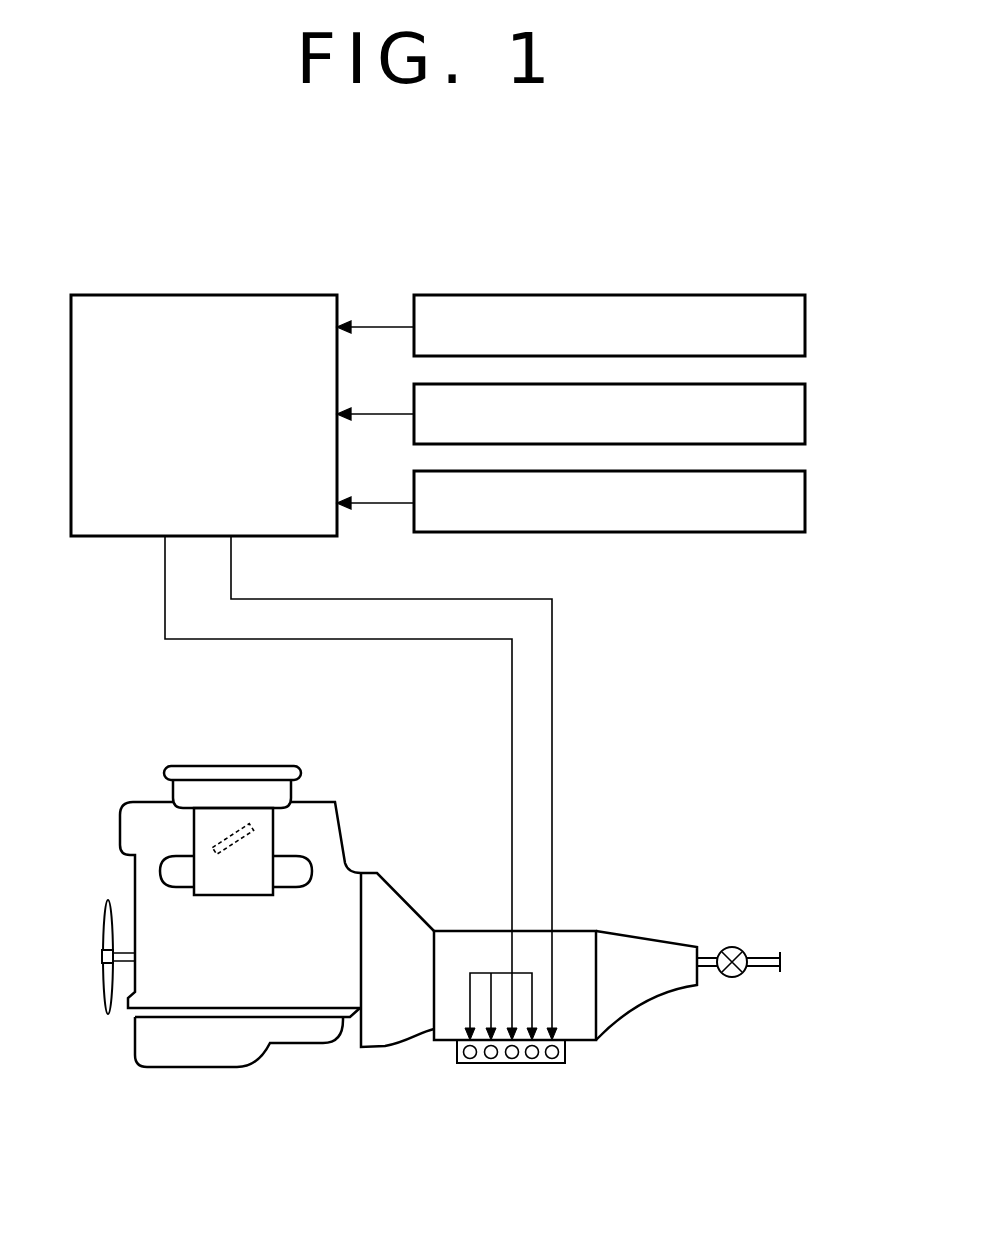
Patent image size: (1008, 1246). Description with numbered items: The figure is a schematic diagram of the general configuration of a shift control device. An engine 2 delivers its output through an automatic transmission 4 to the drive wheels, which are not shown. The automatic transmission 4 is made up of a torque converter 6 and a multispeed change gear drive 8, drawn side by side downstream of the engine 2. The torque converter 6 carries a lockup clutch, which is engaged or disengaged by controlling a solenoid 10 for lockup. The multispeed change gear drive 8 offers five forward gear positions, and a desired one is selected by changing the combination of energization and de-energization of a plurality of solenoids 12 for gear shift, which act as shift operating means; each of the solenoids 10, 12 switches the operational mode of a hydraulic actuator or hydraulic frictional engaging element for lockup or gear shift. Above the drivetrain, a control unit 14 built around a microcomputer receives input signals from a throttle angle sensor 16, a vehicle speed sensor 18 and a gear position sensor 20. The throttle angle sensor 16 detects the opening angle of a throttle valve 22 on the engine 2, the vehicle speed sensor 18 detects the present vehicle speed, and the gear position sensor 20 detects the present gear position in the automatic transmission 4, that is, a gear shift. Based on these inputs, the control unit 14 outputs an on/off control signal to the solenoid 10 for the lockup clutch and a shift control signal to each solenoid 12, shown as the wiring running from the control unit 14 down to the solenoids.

The engine 2 is at (205, 997).
The automatic transmission 4 is at (561, 1026).
The torque converter 6 is at (375, 1038).
The multispeed change gear drive 8 is at (440, 1038).
The solenoid for lockup 10 is at (544, 1050).
The solenoids for gear shift 12 is at (493, 1058).
The control unit 14 is at (206, 295).
The throttle angle sensor 16 is at (805, 328).
The vehicle speed sensor 18 is at (805, 415).
The gear position sensor 20 is at (805, 500).
The throttle valve 22 is at (227, 837).